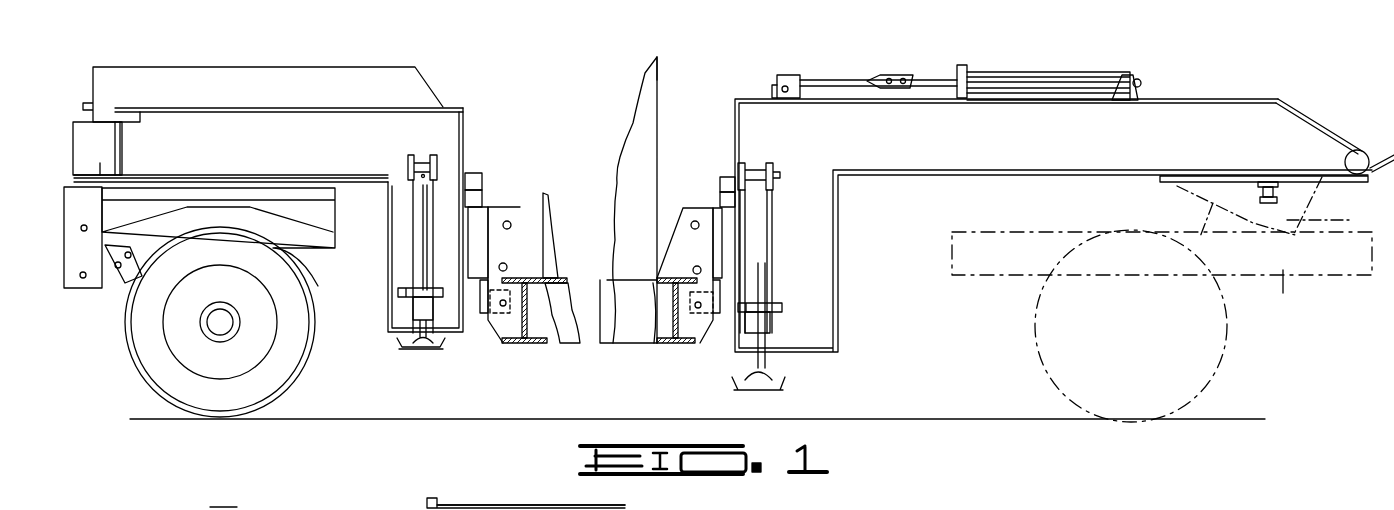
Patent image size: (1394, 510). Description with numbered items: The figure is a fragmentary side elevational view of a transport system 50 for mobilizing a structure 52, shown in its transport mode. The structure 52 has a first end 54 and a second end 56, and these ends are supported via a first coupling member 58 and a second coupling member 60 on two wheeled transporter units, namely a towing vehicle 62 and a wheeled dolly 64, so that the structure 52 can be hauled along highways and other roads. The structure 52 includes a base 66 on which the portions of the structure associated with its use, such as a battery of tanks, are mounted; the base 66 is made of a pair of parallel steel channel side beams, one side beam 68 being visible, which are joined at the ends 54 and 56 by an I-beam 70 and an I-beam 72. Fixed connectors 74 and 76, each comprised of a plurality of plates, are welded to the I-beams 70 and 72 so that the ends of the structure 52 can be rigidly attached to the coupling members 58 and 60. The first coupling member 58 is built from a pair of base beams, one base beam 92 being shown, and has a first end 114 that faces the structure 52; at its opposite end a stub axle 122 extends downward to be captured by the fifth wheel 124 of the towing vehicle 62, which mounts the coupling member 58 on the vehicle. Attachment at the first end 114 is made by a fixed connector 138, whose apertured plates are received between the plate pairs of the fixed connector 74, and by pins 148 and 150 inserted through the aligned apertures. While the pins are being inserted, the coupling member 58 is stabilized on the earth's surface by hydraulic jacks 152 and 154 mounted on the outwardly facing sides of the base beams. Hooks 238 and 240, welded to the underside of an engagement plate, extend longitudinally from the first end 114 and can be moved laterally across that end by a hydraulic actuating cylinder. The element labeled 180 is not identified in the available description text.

In FIG. 1, the transport system 50 is at (817, 56).
In FIG. 1, the structure 52 is at (624, 174).
In FIG. 1, the first end of structure 54 is at (663, 78).
In FIG. 1, the second end of structure 56 is at (541, 204).
In FIG. 1, the first coupling member 58 is at (1207, 127).
In FIG. 2, the first coupling member 58 is at (885, 509).
In FIG. 1, the second coupling member 60 is at (148, 147).
In FIG. 1, the towing vehicle 62 is at (1283, 290).
In FIG. 1, the wheeled dolly 64 is at (123, 208).
In FIG. 1, the base 66 is at (633, 343).
In FIG. 1, the side beam 68 is at (570, 343).
In FIG. 1, the I-beam 70 is at (678, 343).
In FIG. 1, the I-beam 72 is at (532, 343).
In FIG. 1, the fixed connector 74 is at (680, 252).
In FIG. 1, the fixed connector 76 is at (512, 235).
In FIG. 2, the base beam 92 is at (740, 509).
In FIG. 1, the first end of coupling member 114 is at (469, 117).
In FIG. 1, the stub axle 122 is at (1282, 193).
In FIG. 1, the fifth wheel 124 is at (1353, 220).
In FIG. 1, the fixed connector 138 is at (477, 213).
In FIG. 1, the pin 148 is at (504, 218).
In FIG. 1, the pin 150 is at (507, 267).
In FIG. 1, the hydraulic jack 152 is at (757, 255).
In FIG. 1, the hydraulic jack 154 is at (423, 265).
In FIG. 1, the hydraulic cylinder 180 is at (1015, 78).
In FIG. 2, the hydraulic cylinder 180 is at (515, 508).
In FIG. 1, the hook 238 is at (717, 297).
In FIG. 1, the hook 240 is at (483, 307).